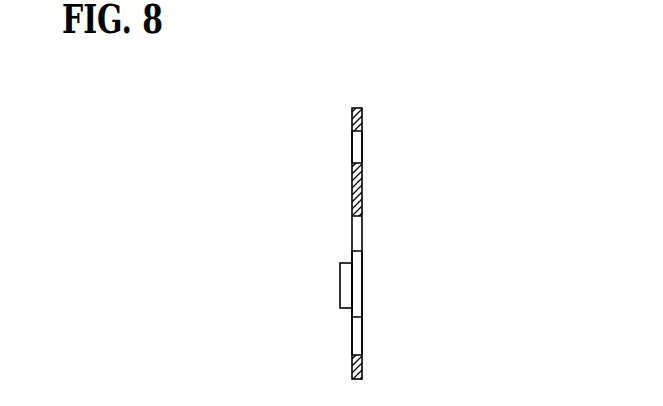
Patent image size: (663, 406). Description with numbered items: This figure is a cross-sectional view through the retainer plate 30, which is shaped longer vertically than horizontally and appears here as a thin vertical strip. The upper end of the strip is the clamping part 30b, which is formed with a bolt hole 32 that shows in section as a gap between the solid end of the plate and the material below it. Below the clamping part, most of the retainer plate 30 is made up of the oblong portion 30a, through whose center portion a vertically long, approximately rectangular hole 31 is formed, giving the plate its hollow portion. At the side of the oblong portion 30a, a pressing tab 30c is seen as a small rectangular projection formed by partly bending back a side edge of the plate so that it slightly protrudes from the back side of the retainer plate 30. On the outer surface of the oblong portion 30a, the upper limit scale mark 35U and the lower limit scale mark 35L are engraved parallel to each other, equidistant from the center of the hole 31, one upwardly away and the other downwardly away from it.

The retainer plate 30 is at (337, 136).
The oblong portion 30a is at (363, 305).
The clamping part 30b is at (363, 112).
The pressing tab 30c is at (340, 281).
The rectangular hole 31 is at (367, 280).
The bolt hole 32 is at (367, 148).
The upper limit scale mark 35U is at (363, 235).
The lower limit scale mark 35L is at (363, 343).